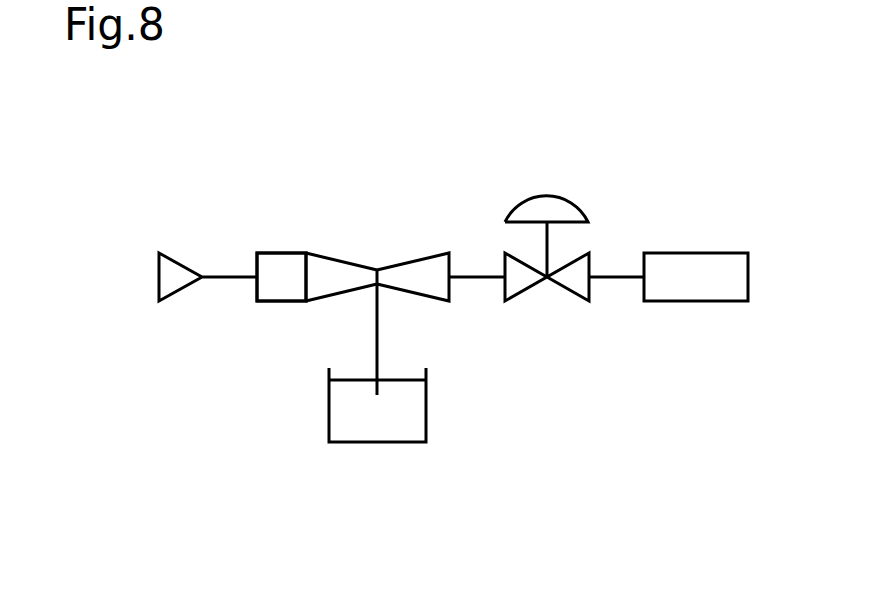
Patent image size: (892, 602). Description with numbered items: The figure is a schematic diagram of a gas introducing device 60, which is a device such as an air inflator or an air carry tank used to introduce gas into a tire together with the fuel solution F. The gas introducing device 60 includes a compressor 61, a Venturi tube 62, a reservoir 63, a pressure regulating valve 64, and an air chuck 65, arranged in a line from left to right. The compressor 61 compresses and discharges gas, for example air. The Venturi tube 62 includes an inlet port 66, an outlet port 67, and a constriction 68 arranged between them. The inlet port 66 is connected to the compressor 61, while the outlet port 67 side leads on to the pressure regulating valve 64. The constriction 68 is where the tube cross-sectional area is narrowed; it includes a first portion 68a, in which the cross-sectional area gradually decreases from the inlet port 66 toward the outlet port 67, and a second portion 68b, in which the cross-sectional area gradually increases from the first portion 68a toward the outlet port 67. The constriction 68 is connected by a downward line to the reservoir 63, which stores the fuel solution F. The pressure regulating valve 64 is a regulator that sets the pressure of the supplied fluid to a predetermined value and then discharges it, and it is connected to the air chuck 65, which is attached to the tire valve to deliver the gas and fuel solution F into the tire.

The gas introducing device 60 is at (177, 180).
The compressor 61 is at (180, 264).
The Venturi tube 62 is at (283, 302).
The reservoir 63 is at (426, 410).
The pressure regulating valve 64 is at (591, 267).
The air chuck 65 is at (700, 253).
The inlet port 66 is at (257, 265).
The outlet port 67 is at (451, 268).
The constriction 68 is at (377, 270).
The first portion 68a is at (333, 259).
The second portion 68b is at (422, 259).
The fuel solution F is at (329, 408).